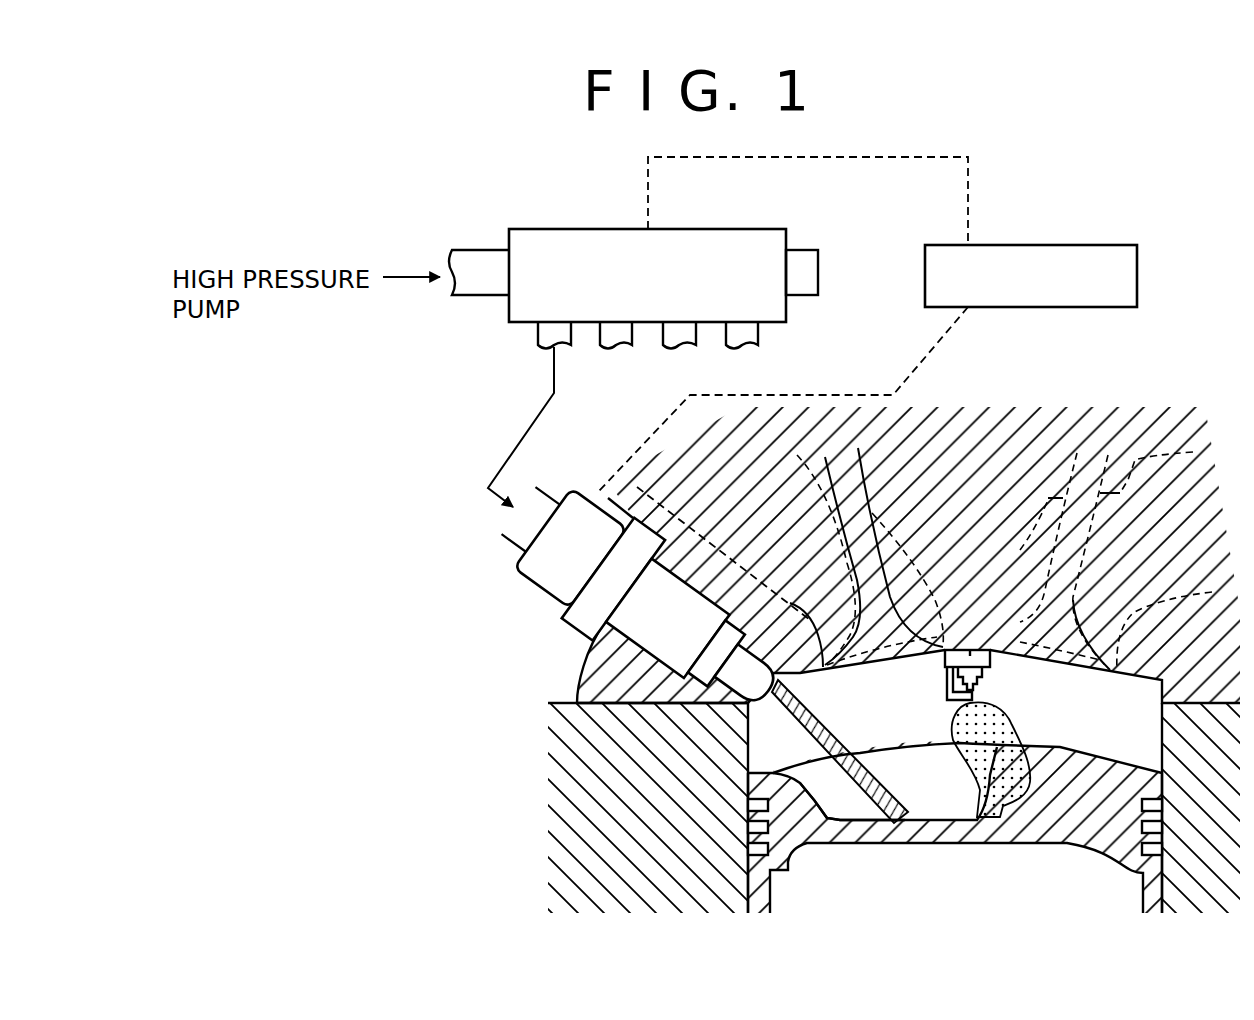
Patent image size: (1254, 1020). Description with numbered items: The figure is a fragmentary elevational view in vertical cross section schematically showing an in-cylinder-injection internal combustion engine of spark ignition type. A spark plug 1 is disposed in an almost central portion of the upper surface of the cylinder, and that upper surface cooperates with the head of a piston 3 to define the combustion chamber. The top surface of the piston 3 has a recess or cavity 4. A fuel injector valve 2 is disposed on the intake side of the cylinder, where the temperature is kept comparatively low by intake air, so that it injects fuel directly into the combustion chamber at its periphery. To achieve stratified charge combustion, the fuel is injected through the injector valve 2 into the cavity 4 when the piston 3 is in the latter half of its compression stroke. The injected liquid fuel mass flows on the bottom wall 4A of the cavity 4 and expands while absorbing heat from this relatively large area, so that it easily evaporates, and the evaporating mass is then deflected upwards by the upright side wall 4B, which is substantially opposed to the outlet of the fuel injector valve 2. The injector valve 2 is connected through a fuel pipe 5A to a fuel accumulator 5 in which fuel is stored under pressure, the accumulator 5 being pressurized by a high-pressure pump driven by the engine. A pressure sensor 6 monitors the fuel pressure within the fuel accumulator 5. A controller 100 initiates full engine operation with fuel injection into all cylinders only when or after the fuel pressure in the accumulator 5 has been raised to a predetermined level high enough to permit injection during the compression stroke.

The spark plug 1 is at (960, 648).
The fuel injector valve 2 is at (545, 571).
The piston 3 is at (1060, 808).
The cavity 4 is at (840, 797).
The bottom wall 4A is at (933, 812).
The upright side wall 4B is at (997, 818).
The fuel accumulator 5 is at (743, 240).
The fuel pipe 5A is at (548, 333).
The pressure sensor 6 is at (802, 274).
The controller 100 is at (1065, 245).